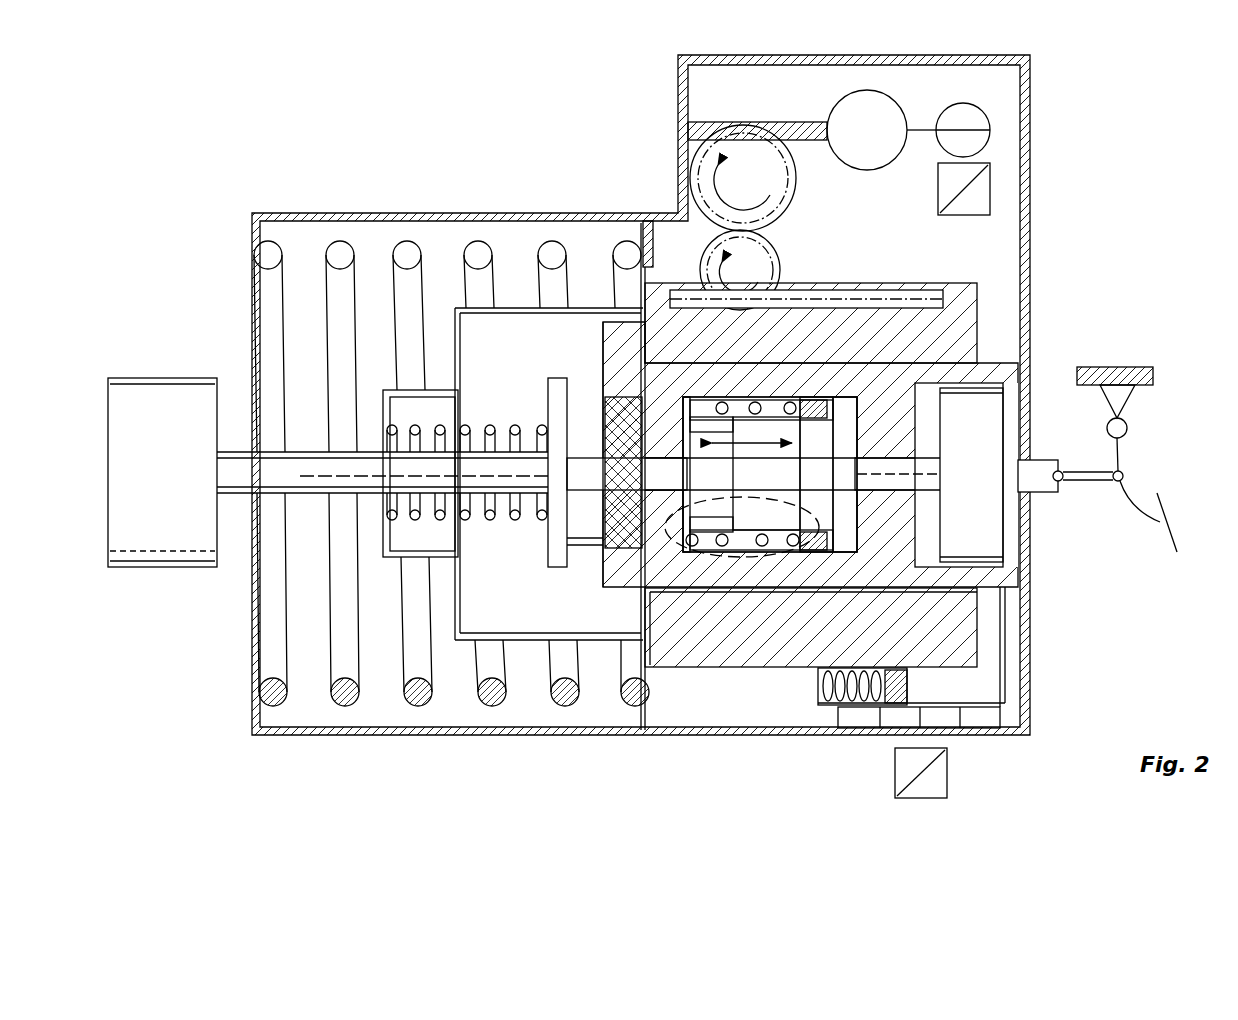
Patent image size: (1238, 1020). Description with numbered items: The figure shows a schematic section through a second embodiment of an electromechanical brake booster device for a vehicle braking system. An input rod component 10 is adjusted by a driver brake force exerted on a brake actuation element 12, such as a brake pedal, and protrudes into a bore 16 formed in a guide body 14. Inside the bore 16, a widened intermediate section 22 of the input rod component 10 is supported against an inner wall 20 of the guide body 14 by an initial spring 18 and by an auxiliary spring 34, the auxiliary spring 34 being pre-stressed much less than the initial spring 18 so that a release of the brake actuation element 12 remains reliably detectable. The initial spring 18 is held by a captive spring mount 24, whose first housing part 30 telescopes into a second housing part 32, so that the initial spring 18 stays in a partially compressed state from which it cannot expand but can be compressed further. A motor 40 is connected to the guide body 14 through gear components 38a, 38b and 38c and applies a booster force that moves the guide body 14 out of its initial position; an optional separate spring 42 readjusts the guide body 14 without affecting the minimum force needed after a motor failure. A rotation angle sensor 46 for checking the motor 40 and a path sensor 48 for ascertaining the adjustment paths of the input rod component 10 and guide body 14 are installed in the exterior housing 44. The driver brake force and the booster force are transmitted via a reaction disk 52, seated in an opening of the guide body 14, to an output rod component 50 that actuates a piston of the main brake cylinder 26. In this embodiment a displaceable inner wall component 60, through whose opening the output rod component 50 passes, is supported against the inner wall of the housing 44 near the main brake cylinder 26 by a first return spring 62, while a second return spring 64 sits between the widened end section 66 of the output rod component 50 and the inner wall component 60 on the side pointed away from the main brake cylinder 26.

The input rod component 10 is at (1012, 492).
The brake actuation element 12 is at (1135, 486).
The guide body 14 is at (990, 370).
The bore 16 is at (747, 447).
The initial spring 18 is at (720, 408).
The inner wall 20 is at (647, 445).
The widened intermediate section 22 is at (822, 445).
The captive spring mount 24 is at (742, 565).
The main brake cylinder 26 is at (152, 540).
The first housing part 30 is at (797, 555).
The second housing part 32 is at (714, 525).
The auxiliary spring 34 is at (805, 408).
The gear component 38a is at (712, 130).
The gear component 38b is at (778, 226).
The gear component 38c is at (950, 628).
The motor 40 is at (845, 110).
The separate spring 42 is at (835, 700).
The housing 44 is at (1028, 192).
The rotation angle sensor 46 is at (998, 162).
The path sensor 48 is at (960, 752).
The output rod component 50 is at (248, 477).
The reaction disk 52 is at (612, 423).
The displaceable inner wall component 60 is at (460, 640).
The first return spring 62 is at (412, 290).
The second return spring 64 is at (472, 520).
The widened section/end section 66 is at (575, 535).